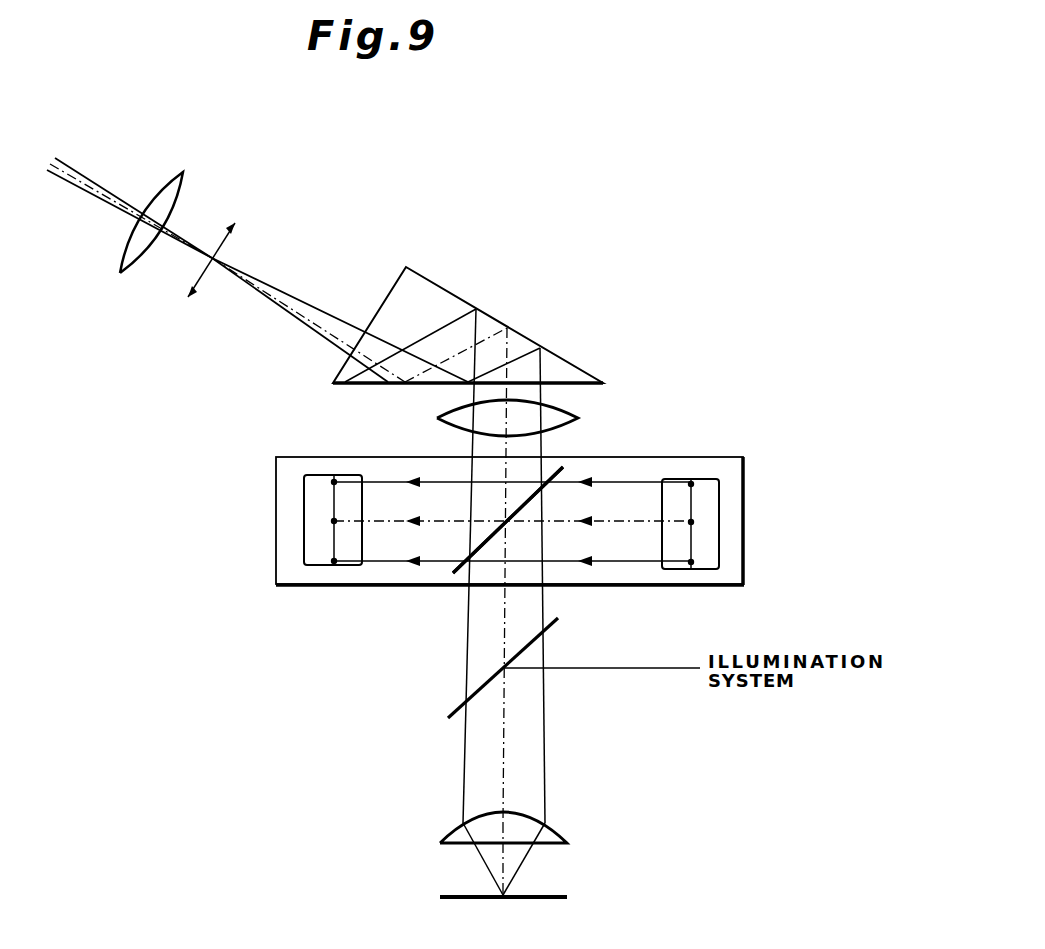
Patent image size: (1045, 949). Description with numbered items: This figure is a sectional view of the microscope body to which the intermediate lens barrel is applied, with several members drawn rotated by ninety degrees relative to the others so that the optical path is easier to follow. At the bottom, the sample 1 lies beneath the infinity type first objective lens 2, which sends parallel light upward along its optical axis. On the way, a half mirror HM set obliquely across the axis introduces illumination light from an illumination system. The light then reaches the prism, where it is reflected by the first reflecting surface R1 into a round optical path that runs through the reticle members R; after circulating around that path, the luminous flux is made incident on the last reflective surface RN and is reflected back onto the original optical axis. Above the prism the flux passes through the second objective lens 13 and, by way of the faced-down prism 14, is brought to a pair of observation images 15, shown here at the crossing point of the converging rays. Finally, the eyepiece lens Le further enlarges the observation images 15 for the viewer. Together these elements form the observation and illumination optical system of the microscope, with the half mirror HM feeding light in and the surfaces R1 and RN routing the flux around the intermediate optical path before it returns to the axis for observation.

The sample 1 is at (567, 893).
The first objective lens 2 is at (565, 832).
The second objective lens 13 is at (580, 419).
The faced-down prism 14 is at (378, 312).
The observation images 15 is at (334, 203).
The eyepiece lens Le is at (125, 272).
The reticle R is at (313, 545).
The last reflective surface RN is at (556, 462).
The first reflecting surface R1 is at (483, 553).
The half mirror HM is at (455, 708).